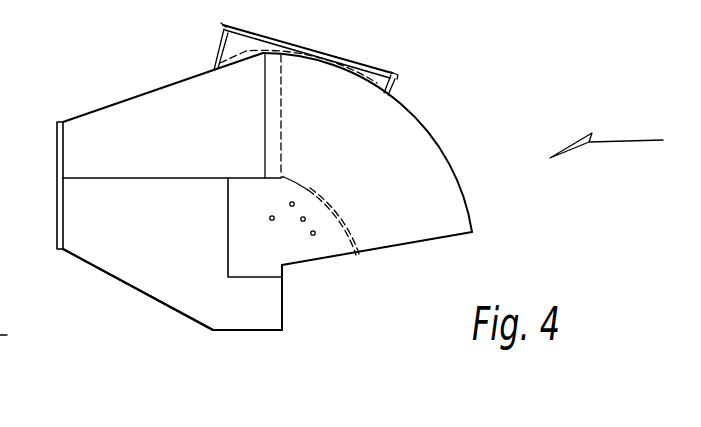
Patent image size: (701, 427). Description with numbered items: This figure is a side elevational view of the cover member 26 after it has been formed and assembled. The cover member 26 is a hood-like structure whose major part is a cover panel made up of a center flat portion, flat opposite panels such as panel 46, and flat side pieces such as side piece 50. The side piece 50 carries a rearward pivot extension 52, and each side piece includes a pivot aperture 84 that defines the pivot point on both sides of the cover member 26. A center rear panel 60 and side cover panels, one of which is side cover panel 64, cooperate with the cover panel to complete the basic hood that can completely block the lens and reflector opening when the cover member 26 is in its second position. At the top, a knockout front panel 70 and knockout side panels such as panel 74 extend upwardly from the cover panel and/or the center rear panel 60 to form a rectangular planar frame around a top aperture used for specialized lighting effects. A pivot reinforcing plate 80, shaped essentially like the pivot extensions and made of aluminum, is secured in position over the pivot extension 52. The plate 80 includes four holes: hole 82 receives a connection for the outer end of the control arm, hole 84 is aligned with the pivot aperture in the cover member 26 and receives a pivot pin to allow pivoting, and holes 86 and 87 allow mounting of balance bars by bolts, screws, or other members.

The cover member 26 is at (345, 115).
The flat opposite panel 46 is at (85, 147).
The flat side piece 50 is at (115, 257).
The rearward pivot extension 52 is at (326, 258).
The center rear panel 60 is at (421, 122).
The side cover panel 64 is at (418, 147).
The knockout front panel 70 is at (222, 47).
The knockout side panel 74 is at (213, 63).
The pivot reinforcing plate 80 is at (238, 250).
The hole 82 is at (270, 218).
The pivot aperture 84 is at (305, 218).
The hole 86 is at (294, 203).
The hole 87 is at (315, 232).